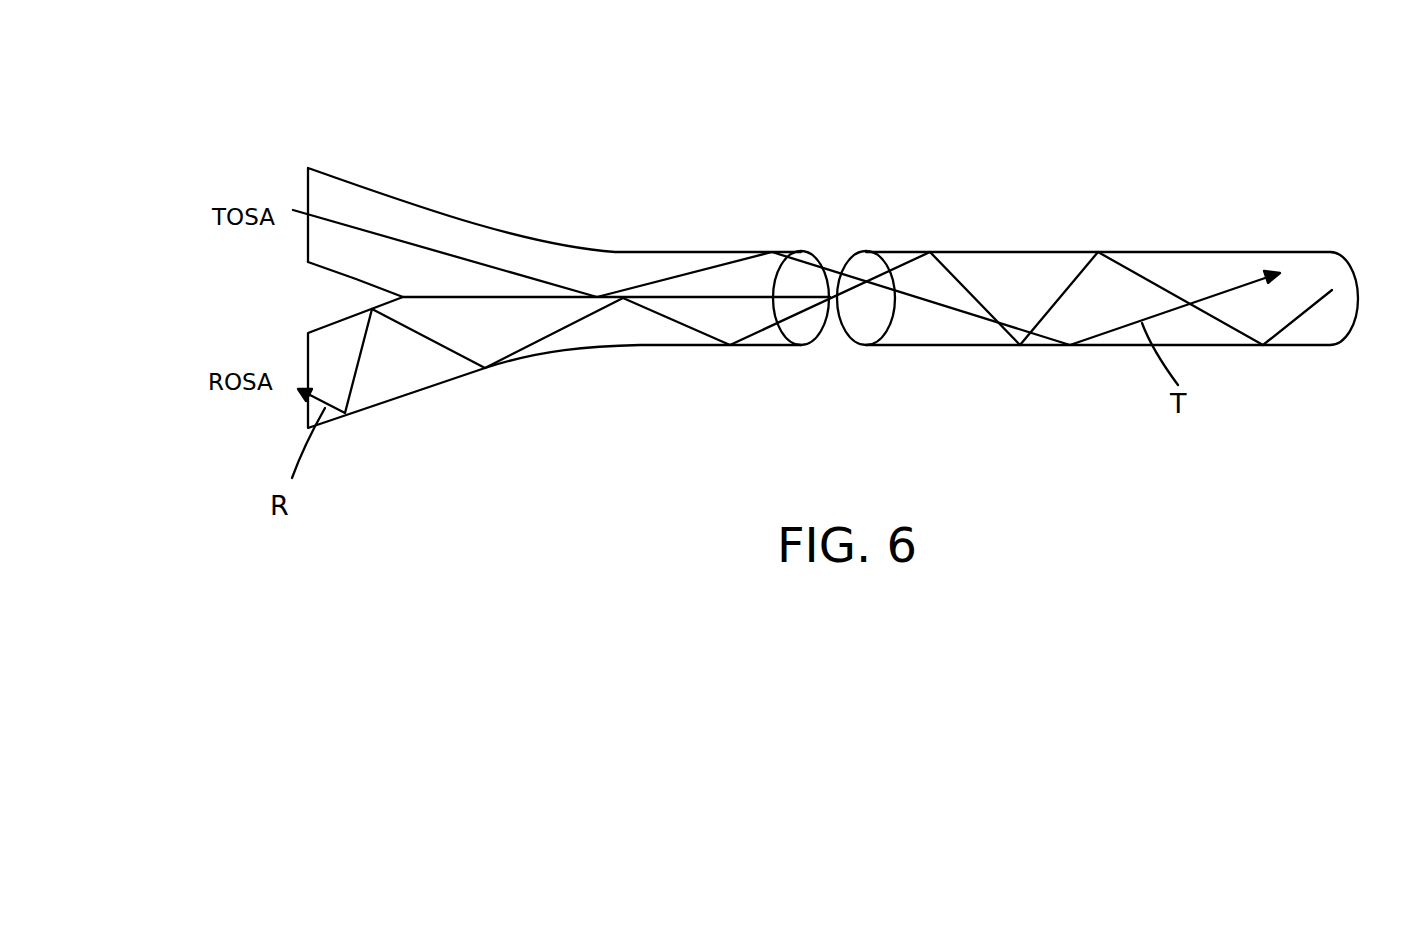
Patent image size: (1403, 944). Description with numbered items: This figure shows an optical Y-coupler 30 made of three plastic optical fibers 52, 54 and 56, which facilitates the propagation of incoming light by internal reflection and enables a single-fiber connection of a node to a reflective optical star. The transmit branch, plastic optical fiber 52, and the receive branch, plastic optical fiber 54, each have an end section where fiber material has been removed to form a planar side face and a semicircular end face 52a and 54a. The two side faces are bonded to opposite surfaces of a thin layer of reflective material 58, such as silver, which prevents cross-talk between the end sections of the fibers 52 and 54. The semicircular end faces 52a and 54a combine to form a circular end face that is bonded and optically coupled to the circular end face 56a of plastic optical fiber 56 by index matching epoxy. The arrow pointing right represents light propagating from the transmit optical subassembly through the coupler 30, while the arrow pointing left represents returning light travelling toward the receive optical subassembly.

The optical Y-coupler 30 is at (1032, 111).
The plastic optical fiber 52 is at (462, 222).
The end face 52a is at (793, 273).
The plastic optical fiber 54 is at (432, 383).
The end face 54a is at (807, 327).
The plastic optical fiber 56 is at (1215, 250).
The end face 56a is at (858, 323).
The thin layer of reflective material 58 is at (710, 300).